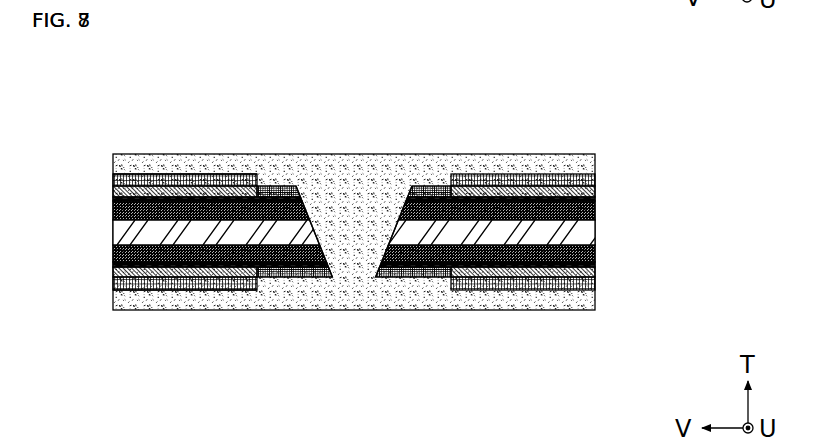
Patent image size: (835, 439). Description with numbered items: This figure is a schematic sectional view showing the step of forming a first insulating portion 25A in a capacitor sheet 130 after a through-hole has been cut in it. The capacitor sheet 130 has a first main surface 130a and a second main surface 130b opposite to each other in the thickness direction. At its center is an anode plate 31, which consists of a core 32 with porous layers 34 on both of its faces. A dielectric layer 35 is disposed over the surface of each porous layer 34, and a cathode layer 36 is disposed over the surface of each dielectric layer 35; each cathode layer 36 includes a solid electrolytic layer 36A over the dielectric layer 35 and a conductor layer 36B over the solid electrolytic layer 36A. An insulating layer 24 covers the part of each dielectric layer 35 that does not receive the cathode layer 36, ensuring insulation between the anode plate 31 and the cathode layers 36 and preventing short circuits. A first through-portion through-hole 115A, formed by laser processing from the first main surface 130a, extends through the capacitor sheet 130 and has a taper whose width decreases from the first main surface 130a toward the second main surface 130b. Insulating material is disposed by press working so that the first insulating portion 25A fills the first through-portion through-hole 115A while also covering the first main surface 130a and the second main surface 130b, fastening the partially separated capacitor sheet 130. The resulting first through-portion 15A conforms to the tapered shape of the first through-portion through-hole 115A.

The capacitor sheet 130 is at (162, 163).
The first main surface 130a is at (225, 174).
The second main surface 130b is at (225, 290).
The first through-portion through-hole 115A is at (308, 218).
The first through-portion 15A is at (350, 218).
The insulating layer 24 is at (432, 190).
The first insulating portion 25A is at (514, 166).
The cathode layer 36 is at (417, 234).
The solid electrolytic layer 36A is at (597, 192).
The conductor layer 36B is at (597, 180).
The dielectric layer 35 is at (597, 199).
The porous layer 34 is at (597, 211).
The core 32 is at (597, 232).
The anode plate 31 is at (417, 233).